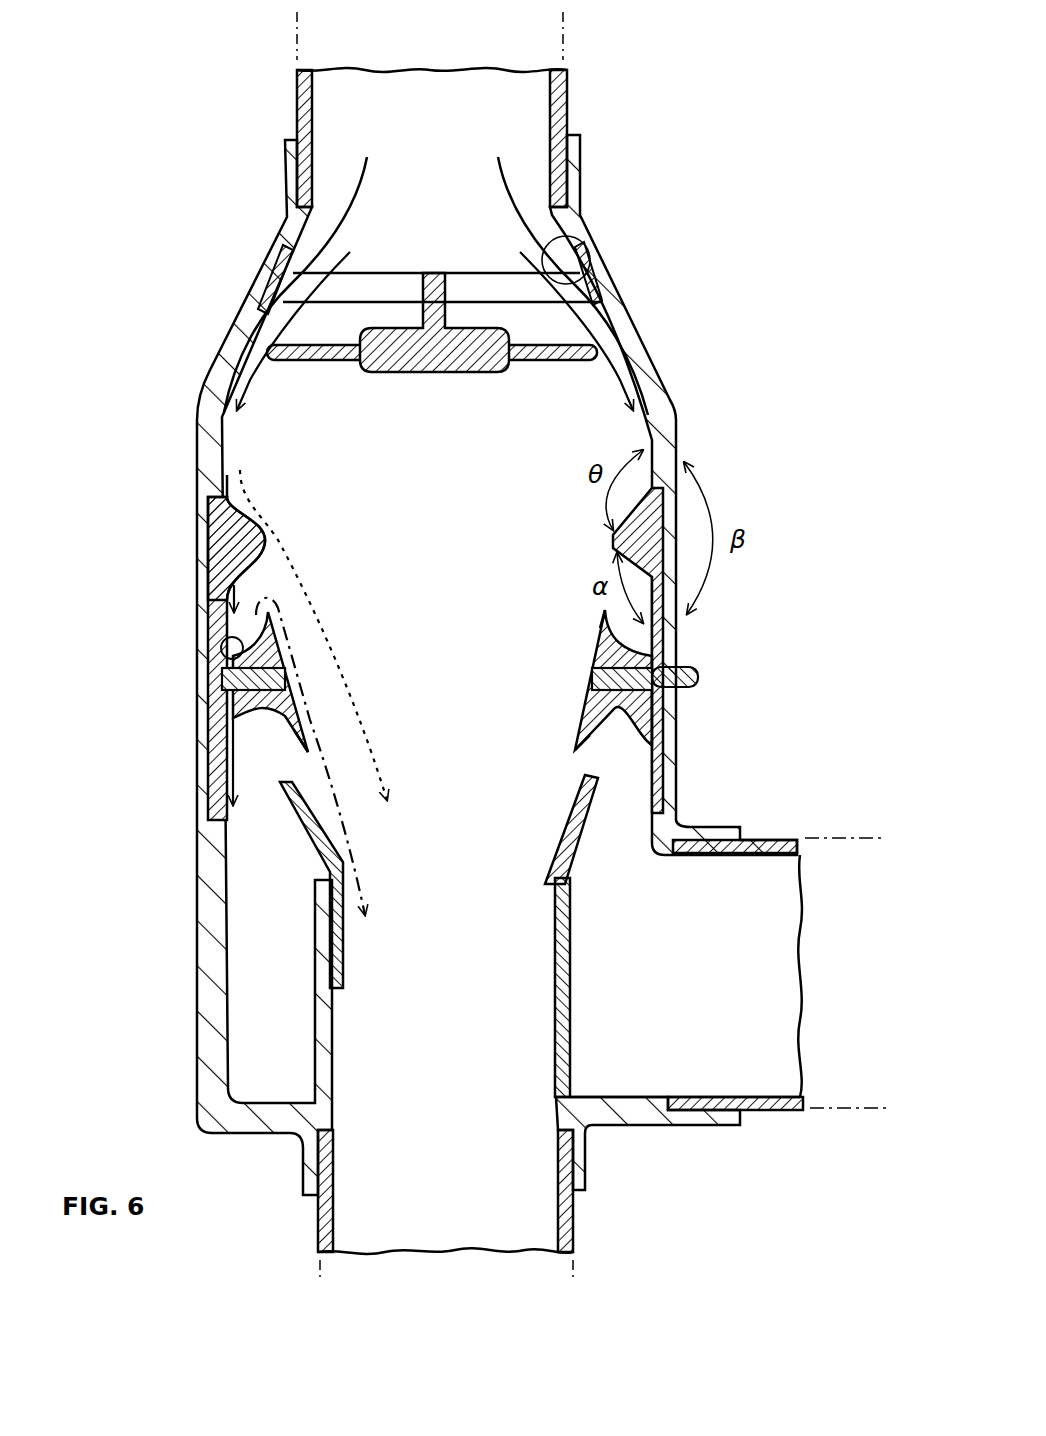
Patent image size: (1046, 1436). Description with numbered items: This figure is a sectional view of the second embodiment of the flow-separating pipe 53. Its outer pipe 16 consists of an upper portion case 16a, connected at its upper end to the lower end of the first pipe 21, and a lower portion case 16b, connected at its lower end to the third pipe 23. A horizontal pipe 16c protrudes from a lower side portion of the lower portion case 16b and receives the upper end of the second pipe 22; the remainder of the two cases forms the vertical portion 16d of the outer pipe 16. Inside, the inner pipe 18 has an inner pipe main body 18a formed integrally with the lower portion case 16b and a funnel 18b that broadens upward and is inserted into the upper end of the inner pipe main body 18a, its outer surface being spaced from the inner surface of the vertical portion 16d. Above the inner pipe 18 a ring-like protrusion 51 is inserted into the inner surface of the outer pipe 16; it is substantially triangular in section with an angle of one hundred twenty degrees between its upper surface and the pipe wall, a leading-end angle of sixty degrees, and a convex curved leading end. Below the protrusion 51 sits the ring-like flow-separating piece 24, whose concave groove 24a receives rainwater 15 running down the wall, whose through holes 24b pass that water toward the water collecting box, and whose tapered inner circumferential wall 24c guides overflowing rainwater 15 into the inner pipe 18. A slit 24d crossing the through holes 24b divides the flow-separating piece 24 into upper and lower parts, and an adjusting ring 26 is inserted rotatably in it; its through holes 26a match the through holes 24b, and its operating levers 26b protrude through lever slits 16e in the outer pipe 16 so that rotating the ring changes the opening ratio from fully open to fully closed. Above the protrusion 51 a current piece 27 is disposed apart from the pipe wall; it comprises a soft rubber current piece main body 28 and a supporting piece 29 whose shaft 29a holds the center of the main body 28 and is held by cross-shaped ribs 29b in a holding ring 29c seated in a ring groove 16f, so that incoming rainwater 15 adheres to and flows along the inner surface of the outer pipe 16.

The flow-separating pipe 53 is at (190, 350).
The outer pipe 16 is at (195, 515).
The upper portion case 16a is at (197, 427).
The lower portion case 16b is at (200, 1030).
The horizontal pipe 16c is at (690, 1125).
The vertical portion 16d is at (212, 600).
The lever slit 16e is at (690, 673).
The ring groove 16f is at (585, 232).
The ring-like protrusion 51 is at (252, 532).
The first pipe 21 is at (297, 90).
The rainwater 15 is at (367, 175).
The shaft 29a is at (437, 272).
The ribs 29b is at (472, 300).
The holding ring 29c is at (283, 272).
The current piece main body 28 is at (318, 362).
The current piece 27 is at (530, 360).
The supporting piece 29 is at (430, 372).
The flow-separating piece 24 is at (597, 638).
The concave groove 24a is at (598, 612).
The through holes 24b is at (228, 652).
The inner circumferential wall 24c is at (578, 705).
The slit 24d is at (288, 680).
The adjusting ring 26 is at (592, 680).
The through holes 26a is at (222, 680).
The operating levers 26b is at (690, 690).
The inner pipe 18 is at (573, 996).
The inner pipe main body 18a is at (573, 1040).
The funnel 18b is at (577, 860).
The second pipe 22 is at (760, 1112).
The third pipe 23 is at (318, 1228).